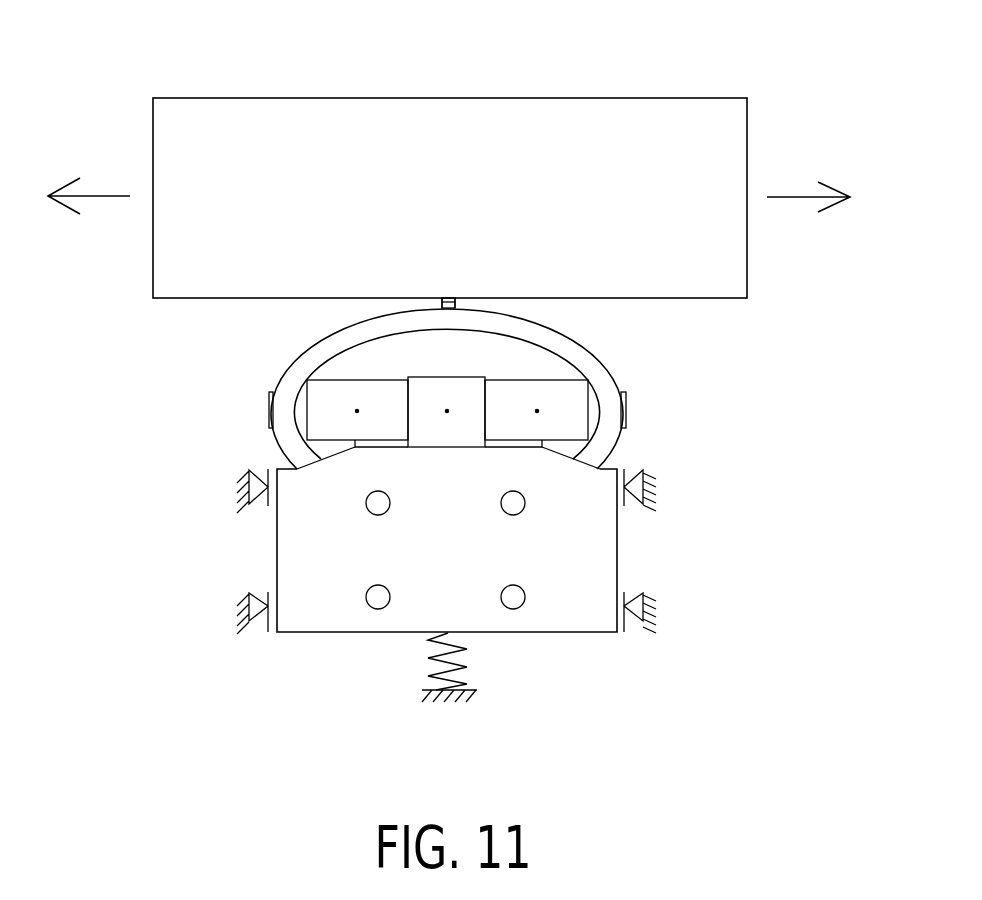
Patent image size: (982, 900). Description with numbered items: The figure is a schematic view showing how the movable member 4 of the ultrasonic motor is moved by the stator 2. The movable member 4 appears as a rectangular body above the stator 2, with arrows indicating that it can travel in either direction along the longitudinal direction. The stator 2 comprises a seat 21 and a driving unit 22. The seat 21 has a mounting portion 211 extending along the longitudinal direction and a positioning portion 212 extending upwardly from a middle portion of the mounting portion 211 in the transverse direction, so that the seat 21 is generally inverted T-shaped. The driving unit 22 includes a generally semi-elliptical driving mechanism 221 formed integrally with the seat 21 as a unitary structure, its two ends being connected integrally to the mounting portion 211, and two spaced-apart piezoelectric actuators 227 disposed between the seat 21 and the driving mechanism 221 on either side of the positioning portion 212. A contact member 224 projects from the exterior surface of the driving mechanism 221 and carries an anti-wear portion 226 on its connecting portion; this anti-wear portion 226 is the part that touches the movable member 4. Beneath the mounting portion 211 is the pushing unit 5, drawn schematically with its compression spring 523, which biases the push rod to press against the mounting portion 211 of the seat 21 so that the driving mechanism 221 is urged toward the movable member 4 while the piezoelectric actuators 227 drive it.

The stator 2 is at (155, 406).
The movable member 4 is at (403, 105).
The pushing unit 5 is at (422, 666).
The seat 21 is at (625, 575).
The driving unit 22 is at (623, 382).
The mounting portion 211 is at (617, 532).
The positioning portion 212 is at (427, 377).
The driving mechanism 221 is at (590, 347).
The contact member 224 is at (453, 292).
The anti-wear portion 226 is at (448, 297).
The piezoelectric actuators 227 is at (322, 378).
The compression spring 523 is at (460, 670).